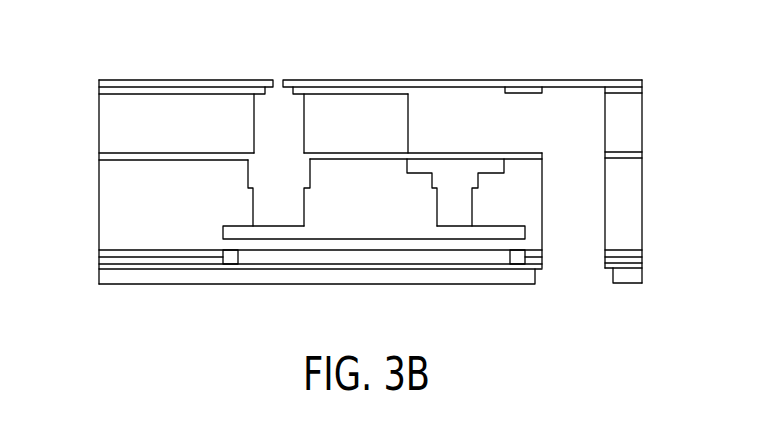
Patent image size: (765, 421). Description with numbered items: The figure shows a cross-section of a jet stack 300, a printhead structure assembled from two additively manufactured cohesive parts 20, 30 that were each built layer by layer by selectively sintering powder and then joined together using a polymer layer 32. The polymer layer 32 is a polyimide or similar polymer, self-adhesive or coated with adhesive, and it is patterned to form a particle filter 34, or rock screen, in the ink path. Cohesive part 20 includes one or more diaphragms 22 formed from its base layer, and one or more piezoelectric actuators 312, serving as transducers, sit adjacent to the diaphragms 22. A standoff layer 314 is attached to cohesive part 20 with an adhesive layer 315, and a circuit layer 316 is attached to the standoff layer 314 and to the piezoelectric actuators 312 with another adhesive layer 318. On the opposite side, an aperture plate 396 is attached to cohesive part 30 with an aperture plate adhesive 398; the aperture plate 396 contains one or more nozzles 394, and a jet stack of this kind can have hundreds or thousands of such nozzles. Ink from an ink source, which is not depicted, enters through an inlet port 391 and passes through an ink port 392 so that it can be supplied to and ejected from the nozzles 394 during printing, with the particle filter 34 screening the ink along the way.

The jet stack 300 is at (248, 67).
The nozzle 394 is at (278, 77).
The inlet port 391 is at (572, 278).
The ink port 392 is at (427, 102).
The aperture plate 396 is at (130, 80).
The aperture plate adhesive 398 is at (99, 91).
The cohesive part 30 is at (103, 127).
The polymer layer 32 is at (99, 157).
The particle filter 34 is at (457, 152).
The cohesive part 20 is at (105, 205).
The diaphragm 22 is at (270, 237).
The adhesive layer 315 is at (100, 250).
The standoff layer 314 is at (100, 258).
The piezoelectric actuator 312 is at (387, 257).
The adhesive layer 318 is at (100, 267).
The circuit layer 316 is at (157, 277).